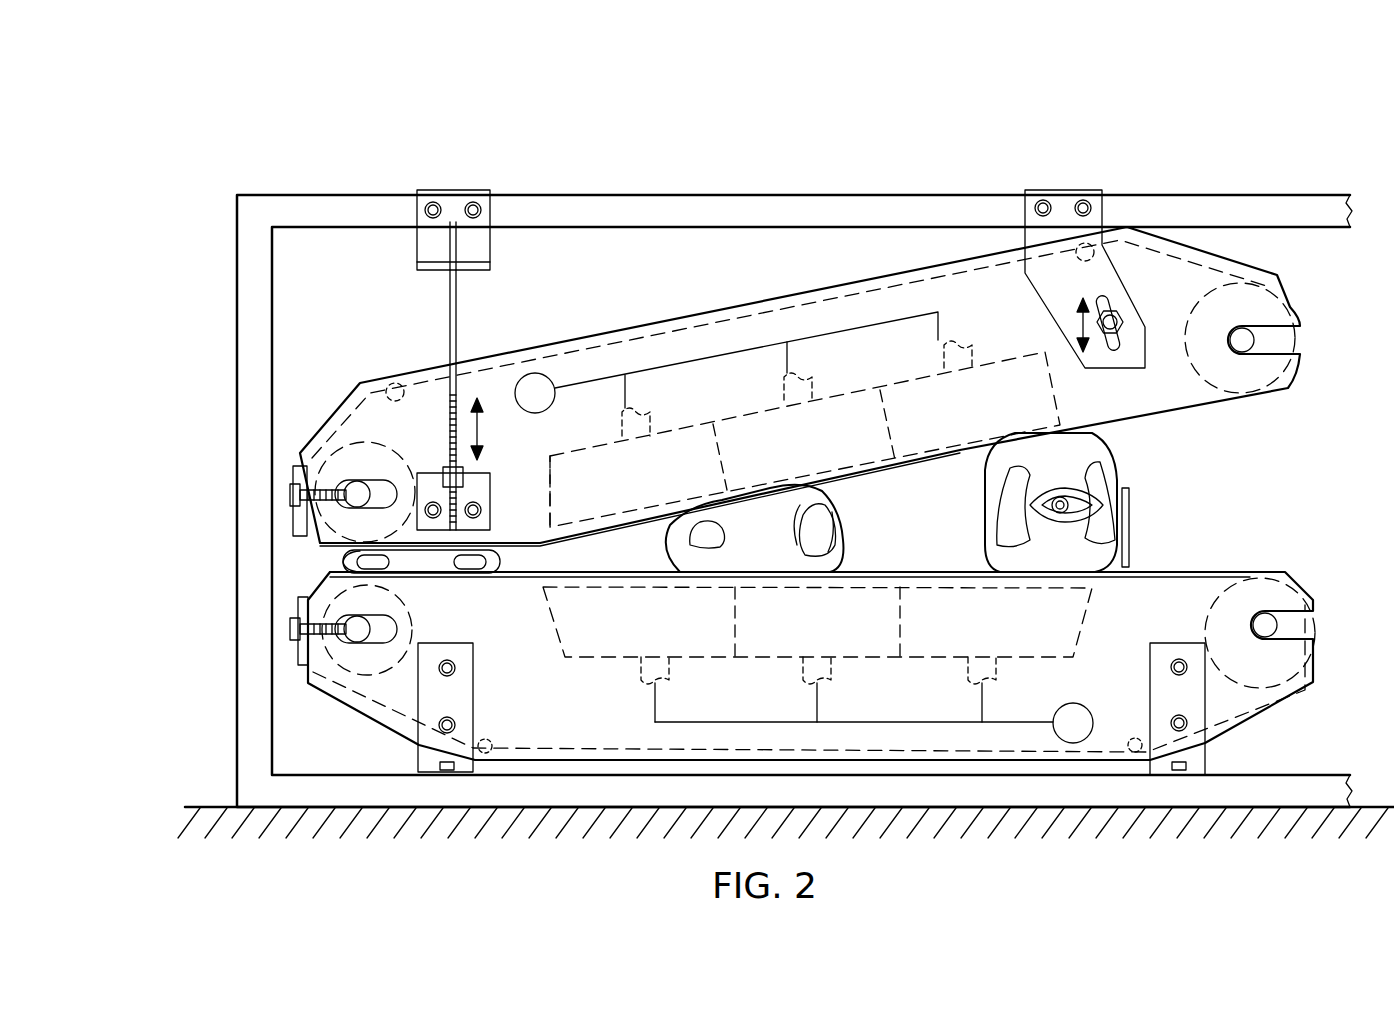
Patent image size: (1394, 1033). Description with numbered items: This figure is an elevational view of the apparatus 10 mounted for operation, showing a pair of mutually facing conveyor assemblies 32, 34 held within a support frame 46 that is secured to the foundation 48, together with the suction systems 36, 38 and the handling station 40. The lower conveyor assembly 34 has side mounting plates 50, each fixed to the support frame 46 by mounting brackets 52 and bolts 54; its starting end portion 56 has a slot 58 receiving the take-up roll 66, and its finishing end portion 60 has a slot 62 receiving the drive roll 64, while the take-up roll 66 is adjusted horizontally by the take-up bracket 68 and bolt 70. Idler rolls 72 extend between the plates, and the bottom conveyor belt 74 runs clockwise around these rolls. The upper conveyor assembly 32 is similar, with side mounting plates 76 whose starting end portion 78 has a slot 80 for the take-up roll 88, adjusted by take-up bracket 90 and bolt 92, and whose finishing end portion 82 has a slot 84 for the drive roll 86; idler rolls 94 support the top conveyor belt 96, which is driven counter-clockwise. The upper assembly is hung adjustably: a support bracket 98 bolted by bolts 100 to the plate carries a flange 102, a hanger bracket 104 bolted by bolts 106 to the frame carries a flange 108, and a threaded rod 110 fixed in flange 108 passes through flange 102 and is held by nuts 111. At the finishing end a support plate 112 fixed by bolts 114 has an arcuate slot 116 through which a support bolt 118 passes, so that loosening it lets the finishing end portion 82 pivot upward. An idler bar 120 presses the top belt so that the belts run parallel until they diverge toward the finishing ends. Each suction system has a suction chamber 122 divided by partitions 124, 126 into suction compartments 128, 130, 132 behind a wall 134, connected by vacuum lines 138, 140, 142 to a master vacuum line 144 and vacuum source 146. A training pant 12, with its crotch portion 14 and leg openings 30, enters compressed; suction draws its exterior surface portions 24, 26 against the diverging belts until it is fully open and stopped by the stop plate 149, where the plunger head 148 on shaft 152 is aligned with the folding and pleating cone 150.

The apparatus 10 is at (678, 182).
The training pant 12 is at (500, 560).
The crotch portion 14 is at (440, 575).
The exterior surface portion 24 is at (555, 542).
The exterior surface portion 26 is at (410, 575).
The leg openings 30 is at (355, 563).
The conveyor assembly 32 is at (543, 322).
The conveyor assembly 34 is at (362, 727).
The suction system 36 is at (982, 346).
The suction system 38 is at (593, 675).
The handling station 40 is at (1250, 490).
The support frame 46 is at (785, 197).
The foundation 48 is at (523, 828).
The side mounting plates 50 is at (1290, 695).
The mounting brackets 52 is at (470, 682).
The bolts 54 is at (442, 762).
The starting end portion 56 is at (308, 690).
The slot 58 is at (380, 645).
The finishing end portion 60 is at (1318, 668).
The slot 62 is at (1318, 615).
The drive roll 64 is at (1318, 630).
The take-up roll 66 is at (320, 578).
The take-up bracket 68 is at (300, 640).
The bolt 70 is at (292, 627).
The idler rolls 72 is at (490, 740).
The bottom conveyor belt 74 is at (1150, 650).
The side mounting plates 76 is at (1255, 258).
The starting end portion 78 is at (293, 470).
The slot 80 is at (367, 470).
The finishing end portion 82 is at (1290, 300).
The slot 84 is at (1300, 350).
The drive roll 86 is at (1302, 330).
The take-up roll 88 is at (350, 410).
The take-up bracket 90 is at (293, 497).
The bolt 92 is at (292, 512).
The idler rolls 94 is at (395, 383).
The top conveyor belt 96 is at (605, 325).
The support bracket 98 is at (485, 482).
The bolts 100 is at (480, 508).
The flange 102 is at (498, 429).
The hanger bracket 104 is at (425, 190).
The bolts 106 is at (478, 203).
The flange 108 is at (420, 270).
The threaded rod 110 is at (457, 302).
The nuts 111 is at (445, 470).
The support plate 112 is at (1100, 192).
The bolts 114 is at (1083, 200).
The arcuate slot 116 is at (1103, 300).
The support bolt 118 is at (1122, 318).
The idler bar 120 is at (555, 510).
The suction chamber 122 is at (690, 418).
The partition 124 is at (732, 455).
The partition 126 is at (890, 430).
The suction compartment 128 is at (672, 483).
The suction compartment 130 is at (839, 466).
The suction compartment 132 is at (952, 445).
The wall 134 is at (888, 420).
The vacuum line 138 is at (618, 400).
The vacuum line 140 is at (790, 353).
The vacuum line 142 is at (940, 328).
The master vacuum line 144 is at (575, 380).
The vacuum source 146 is at (522, 380).
The plunger head 148 is at (1000, 530).
The stop plate 149 is at (1130, 500).
The folding and pleating cone 150 is at (1000, 505).
The shaft 152 is at (1070, 540).